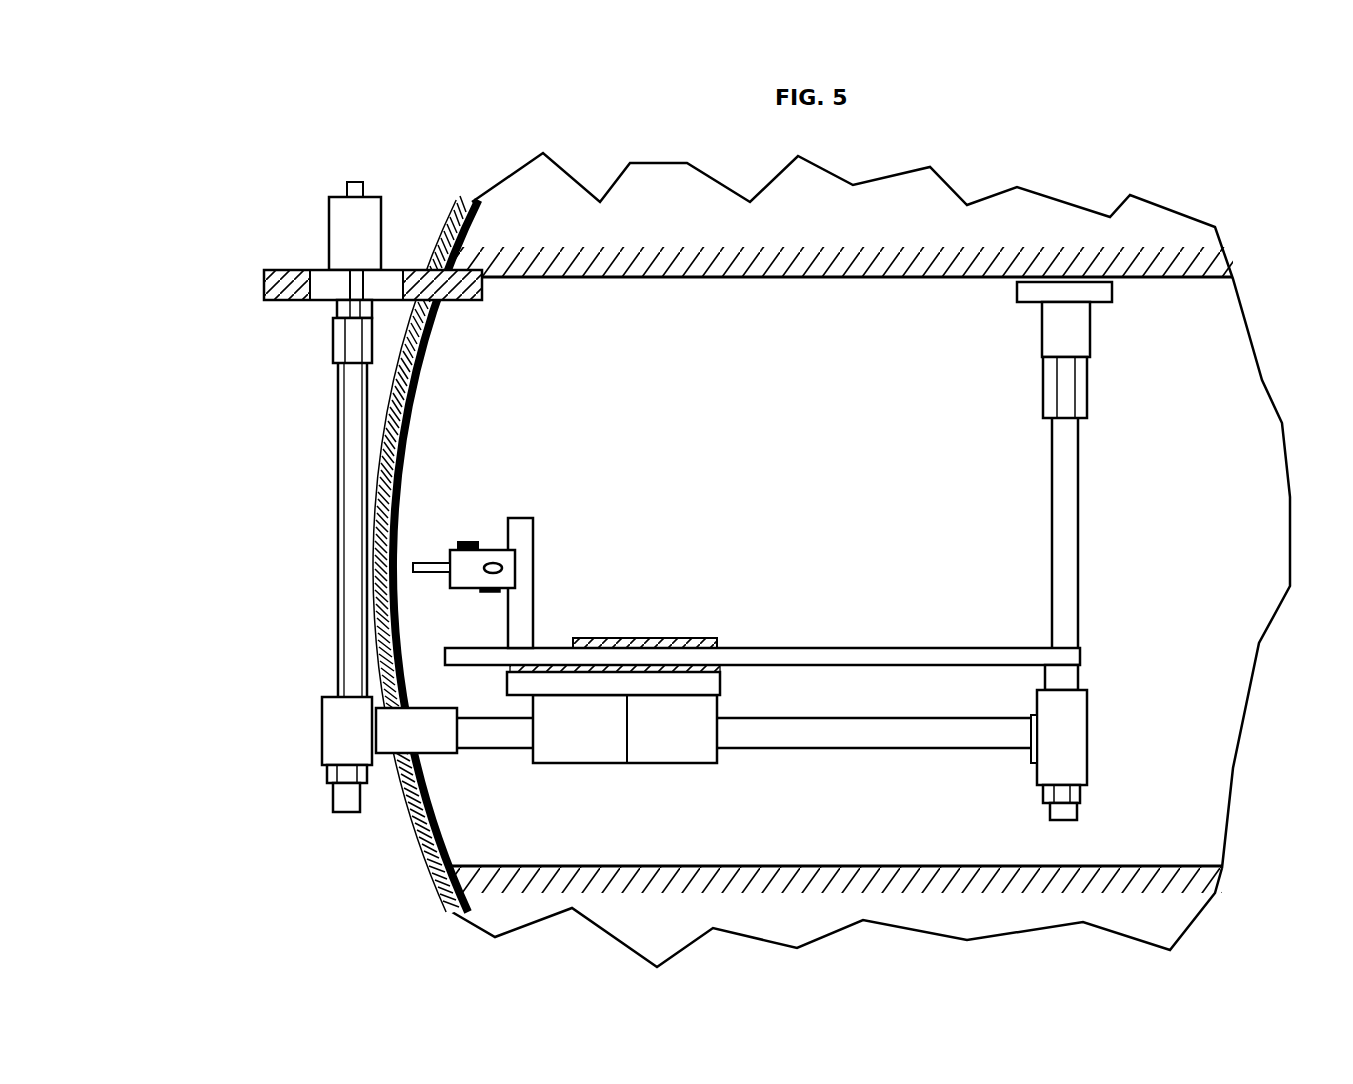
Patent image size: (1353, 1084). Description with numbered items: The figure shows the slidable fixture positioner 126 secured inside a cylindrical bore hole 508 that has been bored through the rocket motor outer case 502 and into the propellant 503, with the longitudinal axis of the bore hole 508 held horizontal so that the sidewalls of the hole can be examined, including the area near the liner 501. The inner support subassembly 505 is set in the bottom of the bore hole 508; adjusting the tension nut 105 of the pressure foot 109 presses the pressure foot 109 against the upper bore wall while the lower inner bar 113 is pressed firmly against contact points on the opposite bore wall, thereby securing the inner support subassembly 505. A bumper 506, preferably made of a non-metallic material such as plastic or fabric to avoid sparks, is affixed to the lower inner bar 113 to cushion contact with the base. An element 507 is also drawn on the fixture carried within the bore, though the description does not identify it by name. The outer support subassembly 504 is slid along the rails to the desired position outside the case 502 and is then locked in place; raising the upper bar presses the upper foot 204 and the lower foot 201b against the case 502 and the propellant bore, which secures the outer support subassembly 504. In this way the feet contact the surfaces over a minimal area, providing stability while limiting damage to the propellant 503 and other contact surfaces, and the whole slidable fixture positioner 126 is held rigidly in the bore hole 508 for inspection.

The slidable fixture positioner 126 is at (393, 290).
The propellant 503 is at (836, 294).
The upper foot 204 is at (446, 351).
The liner 501 is at (452, 554).
The outer support subassembly 504 is at (285, 535).
The sensor 507 is at (514, 578).
The inner support subassembly 505 is at (1175, 550).
The pressure foot 109 is at (1022, 319).
The tension nut 105 is at (1011, 502).
The bumper 506 is at (991, 725).
The lower foot 201b is at (482, 762).
The lower inner bar 113 is at (989, 750).
The rocket motor outer case 502 is at (764, 892).
The bore hole 508 is at (1192, 732).